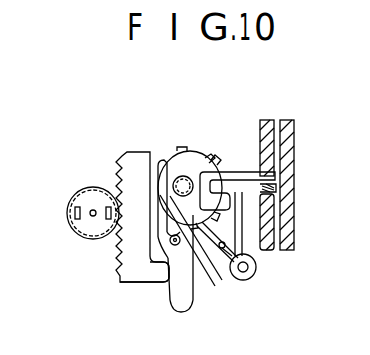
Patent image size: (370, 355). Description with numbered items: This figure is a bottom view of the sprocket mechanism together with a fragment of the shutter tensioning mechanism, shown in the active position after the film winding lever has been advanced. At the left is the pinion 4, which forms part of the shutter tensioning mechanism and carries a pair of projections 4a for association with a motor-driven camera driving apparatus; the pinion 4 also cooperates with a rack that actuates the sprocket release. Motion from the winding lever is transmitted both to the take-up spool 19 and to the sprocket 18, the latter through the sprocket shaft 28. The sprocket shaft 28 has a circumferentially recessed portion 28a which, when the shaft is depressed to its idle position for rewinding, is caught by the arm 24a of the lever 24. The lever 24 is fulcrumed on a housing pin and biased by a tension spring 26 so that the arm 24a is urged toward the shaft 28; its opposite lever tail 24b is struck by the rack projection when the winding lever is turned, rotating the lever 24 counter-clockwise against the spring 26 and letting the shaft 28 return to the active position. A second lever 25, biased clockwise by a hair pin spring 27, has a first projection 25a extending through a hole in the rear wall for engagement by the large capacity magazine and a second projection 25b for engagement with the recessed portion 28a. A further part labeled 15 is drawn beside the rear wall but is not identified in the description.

The pinion 4 is at (83, 229).
The projections 4a is at (75, 213).
The outer wall 15 is at (288, 132).
The sprocket 18 is at (216, 241).
The take-up spool 19 is at (184, 178).
The lever 24 is at (199, 250).
The arm of lever 24a is at (160, 158).
The lever tail 24b is at (170, 294).
The second lever 25 is at (242, 174).
The first projection 25a is at (278, 189).
The second projection 25b is at (208, 156).
The tension spring 26 is at (196, 293).
The hair pin spring 27 is at (256, 262).
The sprocket shaft 28 is at (126, 150).
The circumferentially recessed portion 28a is at (147, 274).